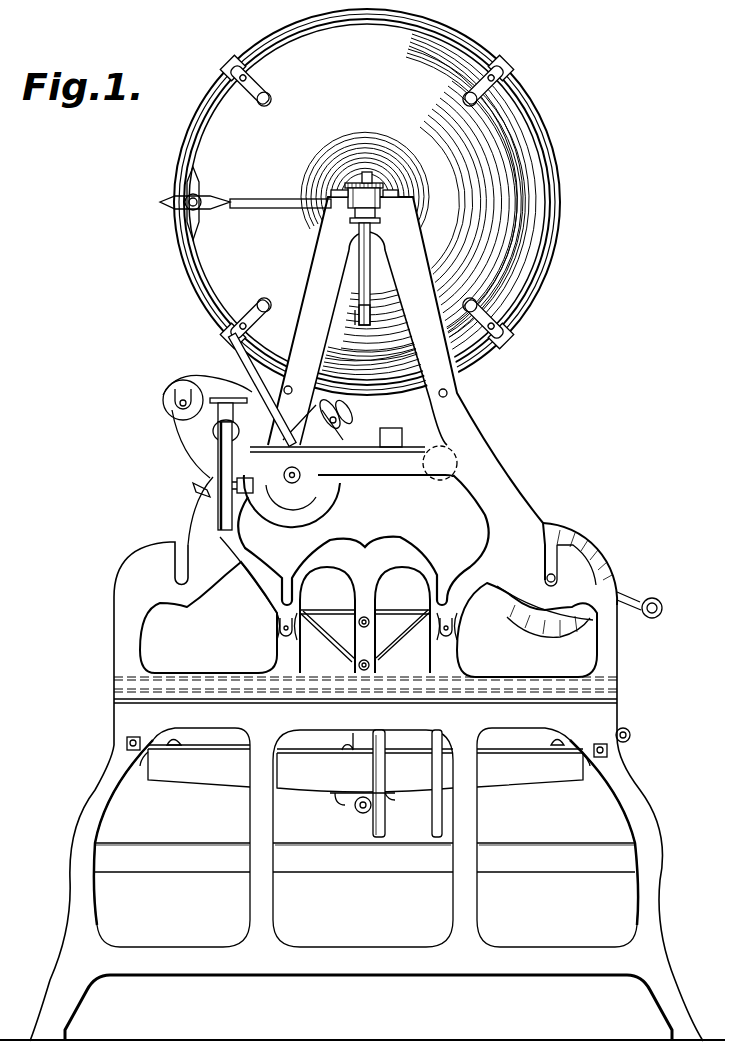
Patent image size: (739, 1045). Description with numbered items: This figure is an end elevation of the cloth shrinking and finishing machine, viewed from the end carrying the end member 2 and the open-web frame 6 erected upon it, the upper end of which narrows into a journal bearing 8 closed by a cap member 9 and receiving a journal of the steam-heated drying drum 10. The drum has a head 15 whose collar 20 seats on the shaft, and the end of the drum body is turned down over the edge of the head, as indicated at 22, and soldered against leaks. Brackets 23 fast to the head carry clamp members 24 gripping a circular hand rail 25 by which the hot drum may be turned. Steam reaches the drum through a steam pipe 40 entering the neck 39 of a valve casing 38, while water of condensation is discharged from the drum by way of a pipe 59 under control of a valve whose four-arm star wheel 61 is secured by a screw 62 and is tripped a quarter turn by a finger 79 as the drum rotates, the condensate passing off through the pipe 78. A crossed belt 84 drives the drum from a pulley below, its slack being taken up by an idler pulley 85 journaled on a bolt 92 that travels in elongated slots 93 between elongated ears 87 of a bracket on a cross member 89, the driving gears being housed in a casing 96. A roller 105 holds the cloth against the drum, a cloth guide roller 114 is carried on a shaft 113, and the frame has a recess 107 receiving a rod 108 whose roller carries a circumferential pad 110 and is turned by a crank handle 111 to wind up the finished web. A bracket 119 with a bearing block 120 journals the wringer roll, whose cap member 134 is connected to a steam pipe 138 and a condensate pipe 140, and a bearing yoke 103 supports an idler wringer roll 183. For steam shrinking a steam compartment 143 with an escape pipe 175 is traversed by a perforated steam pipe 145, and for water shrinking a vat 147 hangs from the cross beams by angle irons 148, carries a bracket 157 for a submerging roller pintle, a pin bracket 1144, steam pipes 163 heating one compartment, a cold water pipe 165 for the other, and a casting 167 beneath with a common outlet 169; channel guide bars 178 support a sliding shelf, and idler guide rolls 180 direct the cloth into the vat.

The end member 2 is at (75, 853).
The frame 6 is at (366, 619).
The journal bearing 8 is at (356, 207).
The cap member 9 is at (399, 194).
The drum 10 is at (546, 224).
The head 15 is at (418, 204).
The collar 20 is at (385, 178).
The turned down end of drum 22 is at (525, 265).
The bracket 23 is at (262, 86).
The clamp member 24 is at (226, 60).
The hand rail 25 is at (556, 174).
The valve casing 38 is at (332, 192).
The neck 39 is at (382, 220).
The steam pipe 40 is at (359, 253).
The pipe 59 is at (262, 210).
The four-arm star wheel 61 is at (168, 198).
The screw 62 is at (199, 197).
The pipe 78 is at (362, 318).
The finger 79 is at (289, 385).
The belt 84 is at (262, 373).
The idler pulley 85 is at (345, 418).
The elongated ears 87 is at (402, 433).
The cross member 89 is at (403, 478).
The bolt 92 is at (348, 398).
The elongated slots 93 is at (337, 460).
The casing 96 is at (195, 486).
The bearing yoke 103 is at (170, 380).
The roller 105 is at (438, 478).
The recess 107 is at (178, 572).
The rod 108 is at (553, 580).
The circumferential pad 110 is at (598, 546).
The crank handle 111 is at (634, 598).
The shaft 113 is at (300, 463).
The cloth guide roller 114 is at (312, 495).
The bracket 119 is at (200, 438).
The bearing block 120 is at (228, 405).
The cap member 134 is at (214, 429).
The pipe 138 is at (218, 508).
The pipe 140 is at (250, 468).
The steam compartment 143 is at (365, 636).
The perforated steam pipe 145 is at (360, 610).
The vat 147 is at (365, 768).
The angle irons 148 is at (145, 765).
The bracket 157 is at (176, 740).
The steam pipes 163 is at (386, 771).
The cold water pipe 165 is at (345, 745).
The casting 167 is at (340, 803).
The common outlet 169 is at (358, 812).
The escape pipe 175 is at (403, 637).
The channel guide bars 178 is at (365, 873).
The idler guide rolls 180 is at (630, 731).
The idler wringer roll 183 is at (163, 396).
The pin bracket 1144 is at (279, 622).